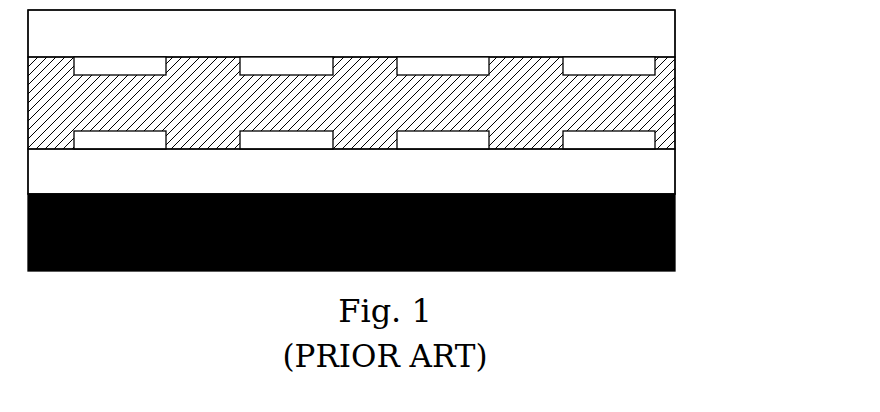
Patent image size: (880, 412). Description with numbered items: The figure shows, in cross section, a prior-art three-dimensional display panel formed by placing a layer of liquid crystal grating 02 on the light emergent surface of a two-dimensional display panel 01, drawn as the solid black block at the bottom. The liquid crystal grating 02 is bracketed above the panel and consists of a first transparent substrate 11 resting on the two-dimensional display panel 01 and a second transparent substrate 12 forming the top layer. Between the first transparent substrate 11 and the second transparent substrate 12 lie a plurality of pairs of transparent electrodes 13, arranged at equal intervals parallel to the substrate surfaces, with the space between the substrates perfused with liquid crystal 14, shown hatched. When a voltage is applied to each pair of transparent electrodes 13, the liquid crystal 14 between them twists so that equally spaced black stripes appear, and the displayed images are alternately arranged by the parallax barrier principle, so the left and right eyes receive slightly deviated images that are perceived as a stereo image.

The 2D display panel 01 is at (675, 248).
The liquid crystal grating 02 is at (755, 18).
The first transparent substrate 11 is at (655, 178).
The second transparent substrate 12 is at (645, 29).
The transparent electrodes 13 is at (637, 66).
The liquid crystal 14 is at (630, 105).